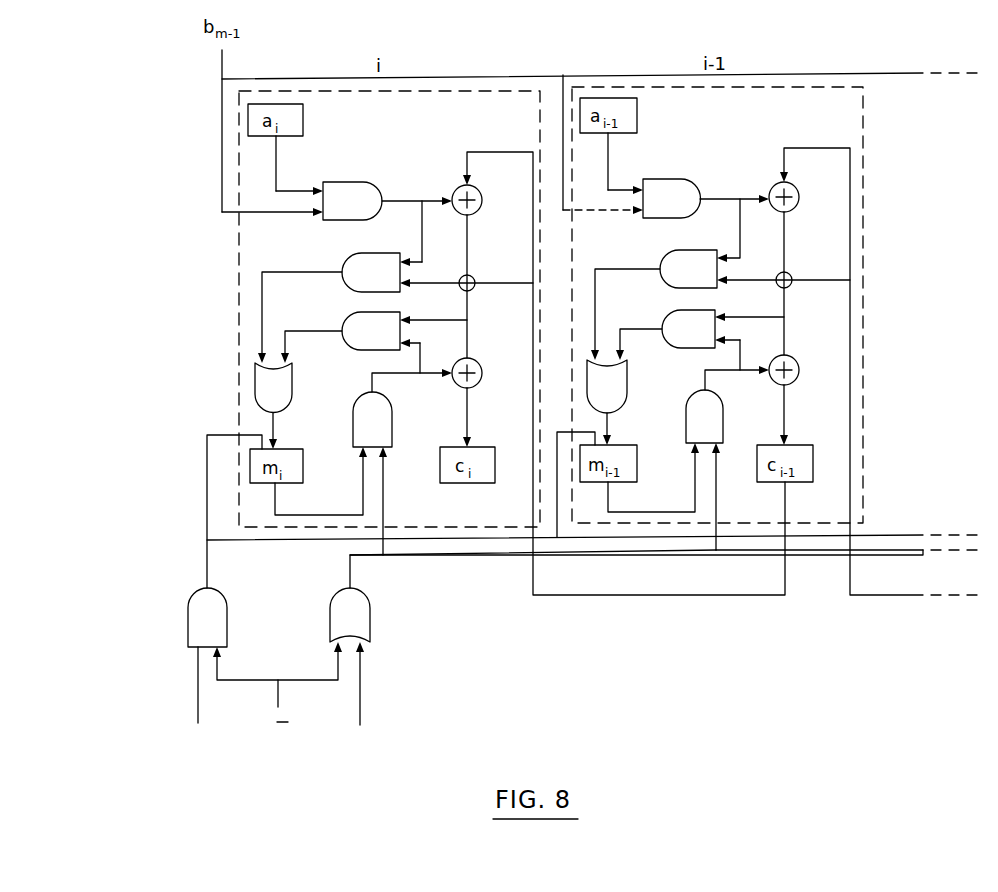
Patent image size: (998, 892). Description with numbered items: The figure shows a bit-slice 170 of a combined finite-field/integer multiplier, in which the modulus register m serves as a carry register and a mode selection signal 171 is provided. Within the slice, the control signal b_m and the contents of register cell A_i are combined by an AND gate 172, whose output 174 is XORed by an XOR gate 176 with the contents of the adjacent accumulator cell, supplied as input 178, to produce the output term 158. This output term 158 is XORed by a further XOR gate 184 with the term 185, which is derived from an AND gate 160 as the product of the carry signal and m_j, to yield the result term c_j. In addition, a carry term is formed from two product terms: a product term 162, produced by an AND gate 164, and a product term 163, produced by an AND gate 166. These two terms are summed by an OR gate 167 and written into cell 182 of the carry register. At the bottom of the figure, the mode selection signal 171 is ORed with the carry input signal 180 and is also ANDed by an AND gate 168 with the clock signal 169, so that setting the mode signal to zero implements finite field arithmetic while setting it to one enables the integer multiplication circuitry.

The output term 158 is at (470, 257).
The AND gate 160 is at (386, 428).
The product term 162 is at (261, 296).
The product term 163 is at (285, 337).
The AND gate 164 is at (358, 278).
The AND gate 166 is at (360, 338).
The OR gate 167 is at (257, 384).
The AND gate 168 is at (195, 621).
The clock signal 169 is at (198, 682).
The bit-slice 170 is at (598, 88).
The mode selection signal 171 is at (278, 690).
The AND gate 172 is at (330, 215).
The output 174 is at (396, 198).
The XOR gate 176 is at (480, 195).
The input 178 is at (470, 151).
The carry input signal 180 is at (362, 683).
The cell m_i 182 is at (250, 468).
The XOR gate 184 is at (479, 363).
The term 185 is at (470, 413).